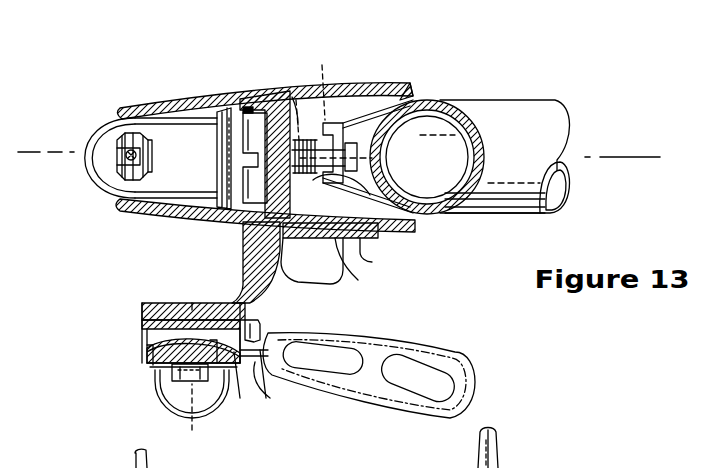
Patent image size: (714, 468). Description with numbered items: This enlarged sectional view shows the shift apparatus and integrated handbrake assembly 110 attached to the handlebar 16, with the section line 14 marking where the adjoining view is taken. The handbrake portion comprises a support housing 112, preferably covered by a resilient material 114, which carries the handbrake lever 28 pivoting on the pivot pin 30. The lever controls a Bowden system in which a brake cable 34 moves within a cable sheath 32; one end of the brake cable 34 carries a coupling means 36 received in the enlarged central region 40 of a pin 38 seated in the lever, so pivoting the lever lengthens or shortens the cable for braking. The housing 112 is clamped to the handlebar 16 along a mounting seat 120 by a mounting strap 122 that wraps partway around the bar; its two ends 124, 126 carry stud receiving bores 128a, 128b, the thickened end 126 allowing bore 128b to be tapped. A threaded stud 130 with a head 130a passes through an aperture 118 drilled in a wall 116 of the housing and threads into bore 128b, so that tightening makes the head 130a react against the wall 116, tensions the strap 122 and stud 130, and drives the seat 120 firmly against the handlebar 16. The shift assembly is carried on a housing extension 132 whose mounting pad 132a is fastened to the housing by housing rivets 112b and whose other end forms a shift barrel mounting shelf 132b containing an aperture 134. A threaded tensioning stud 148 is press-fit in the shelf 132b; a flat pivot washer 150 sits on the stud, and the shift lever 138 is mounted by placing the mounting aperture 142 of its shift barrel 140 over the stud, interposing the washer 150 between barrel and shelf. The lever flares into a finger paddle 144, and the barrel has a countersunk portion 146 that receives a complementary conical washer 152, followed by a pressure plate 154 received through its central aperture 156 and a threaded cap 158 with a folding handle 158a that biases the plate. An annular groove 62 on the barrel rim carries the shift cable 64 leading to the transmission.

The section line 14— 14 is at (25, 160).
The handlebar 16 is at (522, 125).
The handbrake lever 28 is at (101, 143).
The pivot pin 30 is at (226, 138).
The cable sheath 32 is at (498, 452).
The brake cable 34 is at (126, 165).
The coupling means 36 is at (138, 155).
The pin 38 is at (114, 182).
The enlarged central region 40 is at (120, 147).
The annular groove 62 is at (142, 338).
The shift cable 64 is at (266, 398).
The shift apparatus and integrated handbrake assembly 110 is at (160, 246).
The support housing 112 is at (316, 93).
The housing rivets 112b is at (355, 280).
The resilient material 114 is at (372, 92).
The wall 116 is at (269, 100).
The aperture 118 is at (296, 92).
The mounting seat 120 is at (408, 95).
The mounting strap 122 is at (447, 100).
The strap end 124 is at (325, 229).
The strap end 126 is at (372, 238).
The stud receiving bore 128a is at (325, 62).
The stud receiving bore 128b is at (350, 85).
The threaded stud 130 is at (372, 160).
The head 130a is at (247, 140).
The housing extension 132 is at (241, 264).
The mounting pad 132a is at (363, 256).
The shift barrel mounting shelf 132b is at (157, 305).
The aperture 134 is at (197, 300).
The shift lever 138 is at (259, 363).
The shift barrel 140 is at (145, 352).
The mounting aperture 142 is at (140, 333).
The finger paddle 144 is at (445, 356).
The countersunk portion 146 is at (240, 398).
The threaded tensioning stud 148 is at (150, 368).
The pivot washer 150 is at (262, 320).
The conical washer 152 is at (143, 364).
The pressure plate 154 is at (173, 405).
The central aperture 156 is at (188, 420).
The threaded cap 158 is at (210, 384).
The folding handle 158a is at (177, 412).